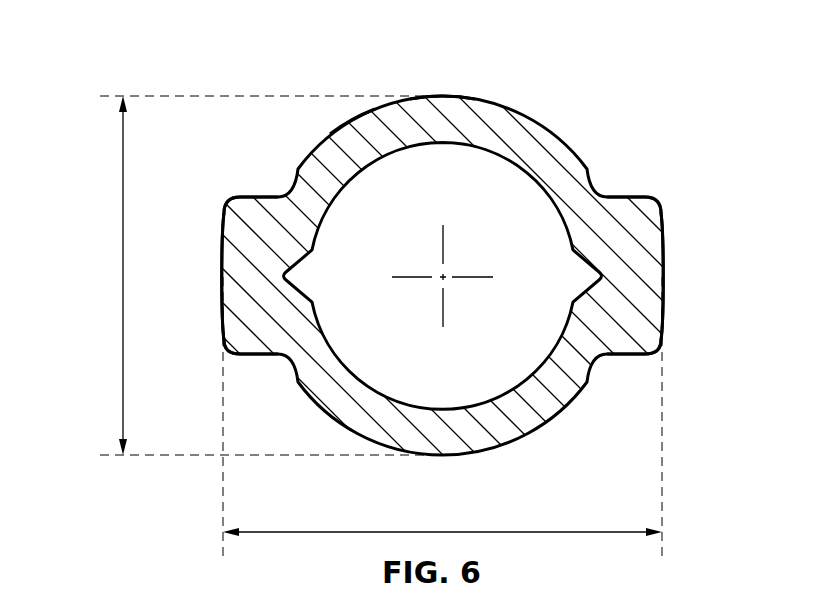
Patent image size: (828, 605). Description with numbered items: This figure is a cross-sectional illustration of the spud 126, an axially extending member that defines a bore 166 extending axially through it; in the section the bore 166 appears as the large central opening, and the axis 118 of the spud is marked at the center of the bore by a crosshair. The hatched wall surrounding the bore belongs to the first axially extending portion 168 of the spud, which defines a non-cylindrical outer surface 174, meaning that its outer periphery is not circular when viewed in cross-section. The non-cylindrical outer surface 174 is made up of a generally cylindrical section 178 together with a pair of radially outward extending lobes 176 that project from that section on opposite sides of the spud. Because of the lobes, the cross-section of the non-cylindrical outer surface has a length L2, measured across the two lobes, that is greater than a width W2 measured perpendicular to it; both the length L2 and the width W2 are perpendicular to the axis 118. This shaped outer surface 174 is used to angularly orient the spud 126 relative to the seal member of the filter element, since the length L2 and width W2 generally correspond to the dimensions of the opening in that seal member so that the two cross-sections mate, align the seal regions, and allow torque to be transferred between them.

The axis 118 is at (438, 283).
The spud 126 is at (414, 260).
The bore 166 is at (410, 235).
The first axially extending portion 168 is at (503, 106).
The non-cylindrical outer surface 174 is at (444, 78).
The radially outward extending lobes 176 is at (228, 225).
The generally cylindrical section 178 is at (352, 117).
The width W2 is at (123, 152).
The length L2 is at (288, 532).